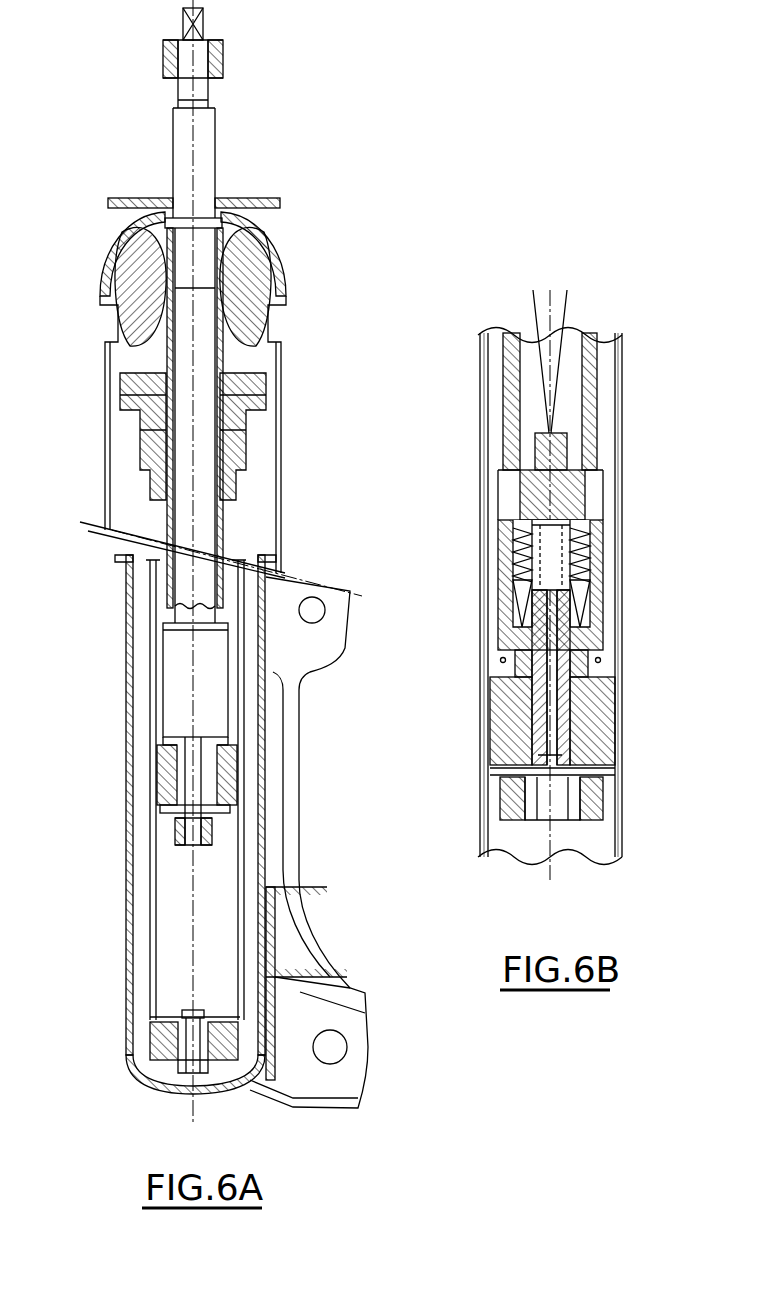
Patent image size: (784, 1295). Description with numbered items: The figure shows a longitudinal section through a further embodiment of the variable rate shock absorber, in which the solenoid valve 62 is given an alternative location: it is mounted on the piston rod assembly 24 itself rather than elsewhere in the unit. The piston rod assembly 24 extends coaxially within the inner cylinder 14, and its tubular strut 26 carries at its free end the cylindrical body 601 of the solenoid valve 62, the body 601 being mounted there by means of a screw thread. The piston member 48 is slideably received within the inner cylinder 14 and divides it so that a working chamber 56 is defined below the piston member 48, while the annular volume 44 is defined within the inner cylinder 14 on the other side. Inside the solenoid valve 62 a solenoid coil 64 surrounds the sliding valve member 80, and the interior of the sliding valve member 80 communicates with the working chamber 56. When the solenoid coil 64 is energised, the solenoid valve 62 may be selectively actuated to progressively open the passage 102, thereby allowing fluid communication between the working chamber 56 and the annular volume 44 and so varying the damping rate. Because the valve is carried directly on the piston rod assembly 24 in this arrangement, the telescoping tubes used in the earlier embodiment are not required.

In FIG. 6A, the inner cylinder 14 is at (150, 638).
In FIG. 6B, the inner cylinder 14 is at (620, 472).
In FIG. 6A, the piston rod assembly 24 is at (112, 520).
In FIG. 6B, the tubular strut 26 is at (603, 374).
In FIG. 6A, the annular volume 44 is at (150, 597).
In FIG. 6B, the annular volume 44 is at (607, 438).
In FIG. 6A, the piston member 48 is at (160, 793).
In FIG. 6B, the piston member 48 is at (613, 730).
In FIG. 6A, the working chamber 56 is at (172, 936).
In FIG. 6B, the working chamber 56 is at (600, 843).
In FIG. 6A, the solenoid valve 62 is at (176, 686).
In FIG. 6B, the solenoid valve 62 is at (610, 595).
In FIG. 6B, the solenoid coil 64 is at (600, 563).
In FIG. 6B, the sliding valve member 80 is at (600, 652).
In FIG. 6B, the passage 102 is at (605, 690).
In FIG. 6B, the cylindrical body 601 is at (600, 525).